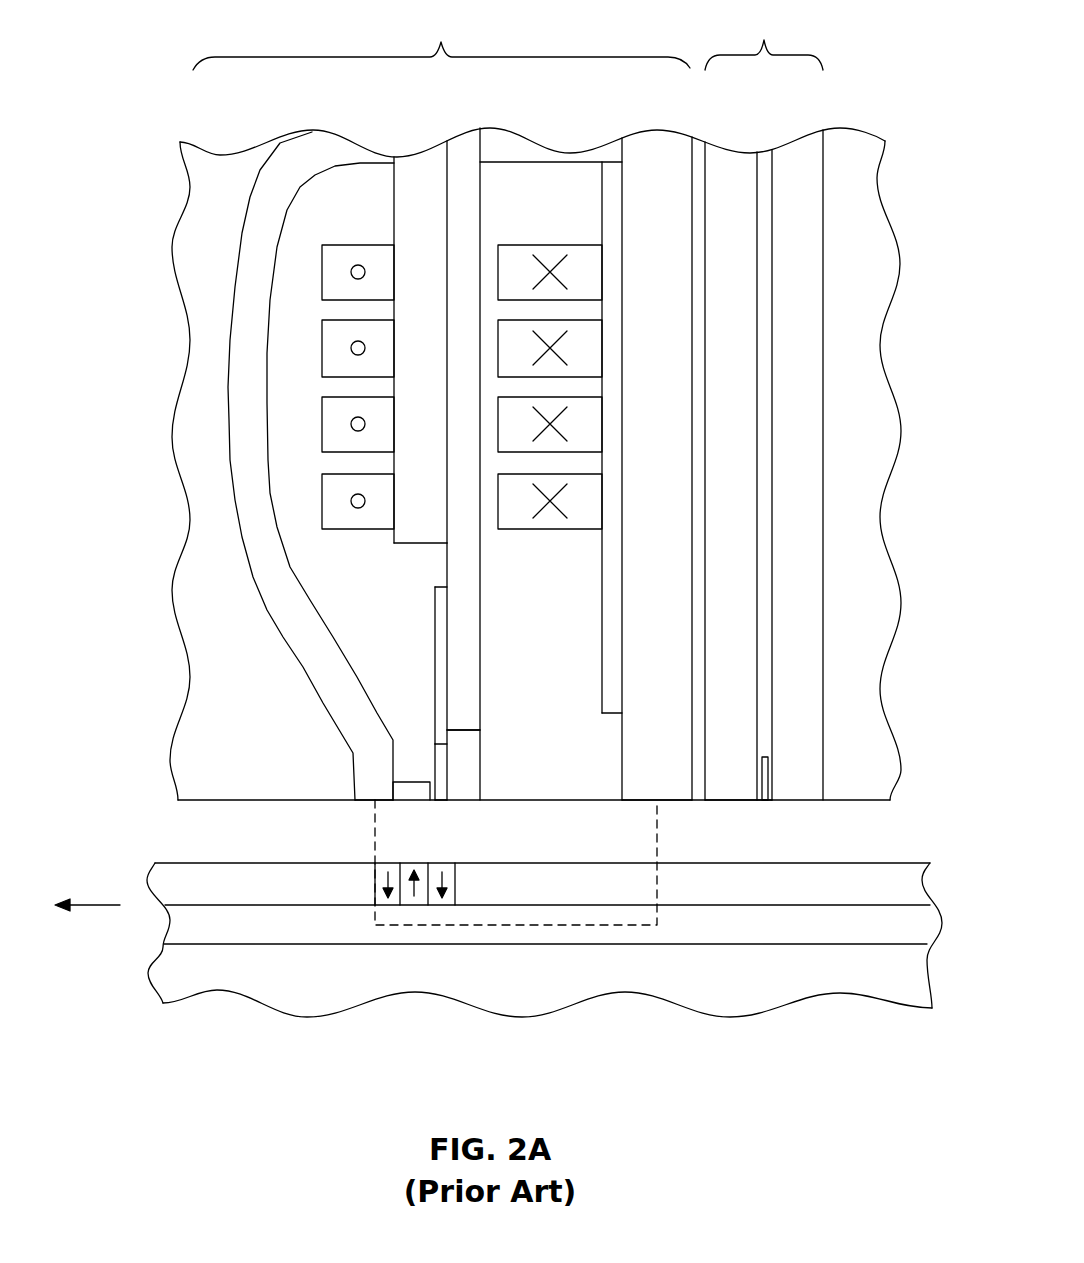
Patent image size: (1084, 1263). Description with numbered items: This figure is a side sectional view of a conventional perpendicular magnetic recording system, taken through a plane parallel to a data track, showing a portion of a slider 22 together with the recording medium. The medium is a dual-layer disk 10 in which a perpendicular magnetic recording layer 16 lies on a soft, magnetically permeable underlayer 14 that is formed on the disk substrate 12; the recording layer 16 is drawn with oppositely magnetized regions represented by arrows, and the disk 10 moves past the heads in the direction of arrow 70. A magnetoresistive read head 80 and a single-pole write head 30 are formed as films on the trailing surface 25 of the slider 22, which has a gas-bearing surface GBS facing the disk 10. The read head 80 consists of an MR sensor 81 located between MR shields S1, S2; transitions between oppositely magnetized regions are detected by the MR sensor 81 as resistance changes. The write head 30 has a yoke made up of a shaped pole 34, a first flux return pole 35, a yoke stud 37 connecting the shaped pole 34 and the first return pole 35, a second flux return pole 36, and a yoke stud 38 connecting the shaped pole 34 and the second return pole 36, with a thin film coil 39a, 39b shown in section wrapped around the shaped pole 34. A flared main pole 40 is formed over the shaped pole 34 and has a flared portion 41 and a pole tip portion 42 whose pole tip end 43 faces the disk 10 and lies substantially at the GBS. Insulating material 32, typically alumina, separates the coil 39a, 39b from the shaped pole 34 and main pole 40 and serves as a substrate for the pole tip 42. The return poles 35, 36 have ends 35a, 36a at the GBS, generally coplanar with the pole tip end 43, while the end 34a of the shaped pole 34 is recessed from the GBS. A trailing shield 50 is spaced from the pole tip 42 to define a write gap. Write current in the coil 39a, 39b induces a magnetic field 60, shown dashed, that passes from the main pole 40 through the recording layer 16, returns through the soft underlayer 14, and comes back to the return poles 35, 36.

The disk 10 is at (723, 1037).
The disk substrate 12 is at (172, 970).
The soft underlayer 14 is at (170, 918).
The recording layer 16 is at (235, 872).
The slider 22 is at (893, 230).
The trailing surface 25 is at (823, 162).
The write head 30 is at (441, 39).
The insulating material 32 is at (583, 790).
The shaped pole 34 is at (465, 347).
The end of shaped pole 34a is at (463, 732).
The first flux return pole 35 is at (632, 765).
The end of first return pole 35a is at (665, 803).
The second flux return pole 36 is at (327, 700).
The end of second return pole 36a is at (367, 805).
The yoke stud 37 is at (513, 140).
The yoke stud 38 is at (417, 168).
The thin film coil 39a is at (570, 245).
The thin film coil 39b is at (362, 245).
The flared main pole 40 is at (445, 583).
The flared portion 41 is at (433, 662).
The pole tip portion 42 is at (443, 788).
The pole tip end 43 is at (442, 802).
The trailing shield 50 is at (413, 761).
The magnetic field 60 is at (412, 927).
The arrow 70 is at (95, 900).
The read head 80 is at (764, 404).
The MR sensor 81 is at (772, 770).
The MR shield S1 is at (817, 700).
The MR shield S2 is at (742, 803).
The gas-bearing surface GBS is at (843, 803).